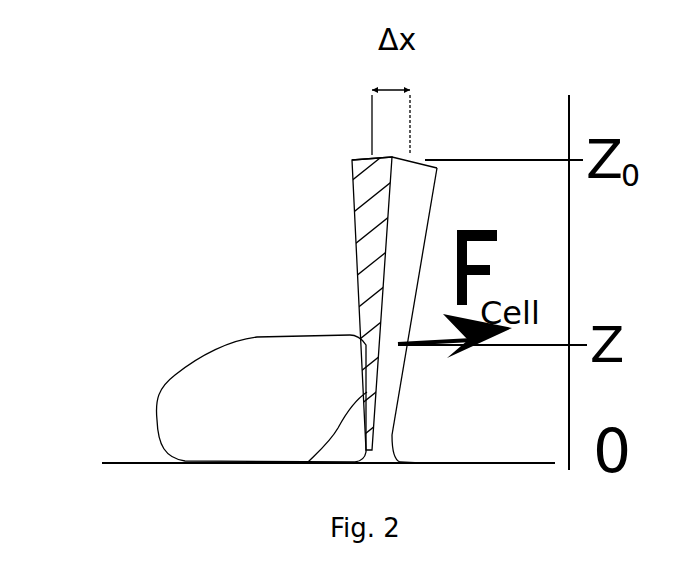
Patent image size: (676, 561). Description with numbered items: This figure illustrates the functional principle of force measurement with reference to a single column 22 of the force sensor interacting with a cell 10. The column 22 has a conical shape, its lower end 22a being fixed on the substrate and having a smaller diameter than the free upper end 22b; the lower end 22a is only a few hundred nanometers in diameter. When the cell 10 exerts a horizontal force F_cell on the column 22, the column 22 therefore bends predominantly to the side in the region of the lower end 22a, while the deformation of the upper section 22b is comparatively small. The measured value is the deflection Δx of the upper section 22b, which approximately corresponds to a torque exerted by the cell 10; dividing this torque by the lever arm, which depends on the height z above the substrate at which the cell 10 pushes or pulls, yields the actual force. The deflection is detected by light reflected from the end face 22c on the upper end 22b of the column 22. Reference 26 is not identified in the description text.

The cell 10 is at (267, 356).
The column 22 is at (366, 279).
The lower end 22a is at (389, 437).
The upper end 22b is at (433, 185).
The end face 22c is at (418, 156).
The substrate surface 26 is at (120, 463).